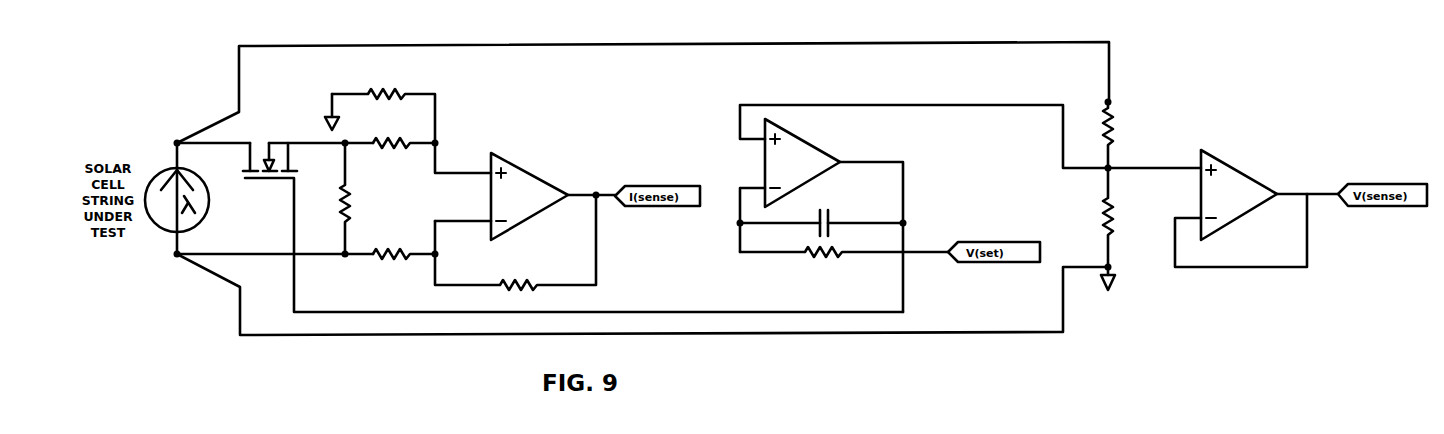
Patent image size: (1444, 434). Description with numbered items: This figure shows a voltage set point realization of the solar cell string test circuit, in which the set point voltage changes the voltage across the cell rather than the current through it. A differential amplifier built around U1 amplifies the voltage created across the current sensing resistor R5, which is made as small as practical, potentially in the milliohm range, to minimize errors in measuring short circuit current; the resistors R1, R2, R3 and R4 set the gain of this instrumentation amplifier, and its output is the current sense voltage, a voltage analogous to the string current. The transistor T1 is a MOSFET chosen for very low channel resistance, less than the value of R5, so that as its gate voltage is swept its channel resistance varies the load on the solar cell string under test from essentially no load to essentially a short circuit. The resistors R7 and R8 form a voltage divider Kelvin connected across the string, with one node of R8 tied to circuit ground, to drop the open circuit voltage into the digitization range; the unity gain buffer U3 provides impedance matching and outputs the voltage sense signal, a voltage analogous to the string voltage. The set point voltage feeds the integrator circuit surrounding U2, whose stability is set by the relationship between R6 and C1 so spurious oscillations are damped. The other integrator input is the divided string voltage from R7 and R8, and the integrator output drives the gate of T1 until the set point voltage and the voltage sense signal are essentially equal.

The transistor T1 is at (573, 215).
The gain-setting resistor R1 is at (408, 131).
The gain-setting resistor R2 is at (515, 242).
The gain-setting resistor R3 is at (404, 153).
The gain-setting resistor R4 is at (404, 264).
The current sensing resistor R5 is at (356, 198).
The integrator resistor R6 is at (844, 267).
The voltage divider resistor R7 is at (1120, 135).
The voltage divider resistor R8 is at (1119, 229).
The integrator capacitor C1 is at (821, 216).
The differential amplifier U1 is at (553, 196).
The integrator amplifier U2 is at (970, 178).
The unity gain buffer U3 is at (1256, 208).